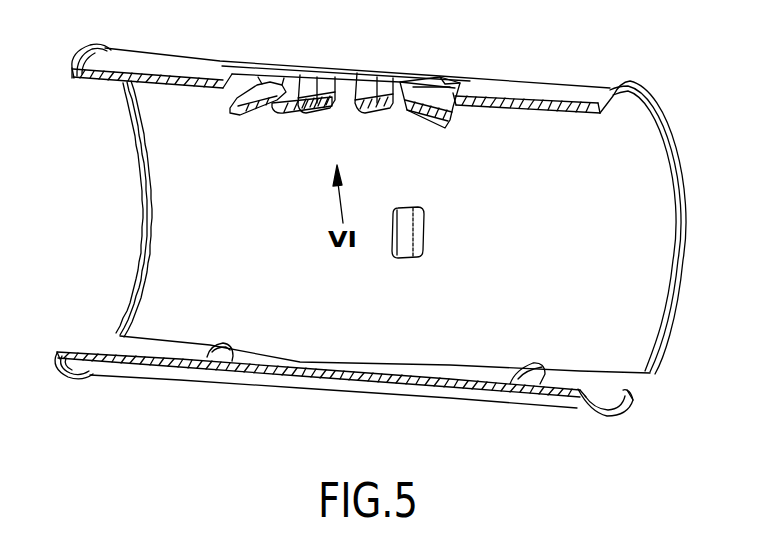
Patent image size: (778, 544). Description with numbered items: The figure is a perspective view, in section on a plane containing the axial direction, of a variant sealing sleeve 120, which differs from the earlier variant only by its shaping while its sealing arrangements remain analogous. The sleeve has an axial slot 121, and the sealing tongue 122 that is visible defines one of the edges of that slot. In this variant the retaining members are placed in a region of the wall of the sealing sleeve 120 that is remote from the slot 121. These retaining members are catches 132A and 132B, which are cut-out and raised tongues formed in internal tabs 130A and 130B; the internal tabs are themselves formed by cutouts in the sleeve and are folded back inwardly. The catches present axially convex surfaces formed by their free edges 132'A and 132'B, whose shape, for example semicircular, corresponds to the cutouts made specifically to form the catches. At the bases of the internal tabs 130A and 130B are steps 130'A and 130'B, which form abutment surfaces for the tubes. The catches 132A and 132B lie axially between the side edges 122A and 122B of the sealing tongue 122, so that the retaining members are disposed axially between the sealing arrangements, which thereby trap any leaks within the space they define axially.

The sealing sleeve 120 is at (640, 225).
The slot 121 is at (641, 385).
The sealing tongue 122 is at (357, 362).
The side edge of the sealing tongue 122A is at (220, 352).
The side edge of the sealing tongue 122B is at (540, 372).
The internal tab 130A is at (280, 110).
The step 130'A is at (332, 123).
The internal tab 130B is at (388, 115).
The step 130'B is at (385, 70).
The catch 132A is at (265, 87).
The free edge of the catch 132'A is at (323, 70).
The catch 132B is at (455, 80).
The free edge of the catch 132'B is at (441, 78).